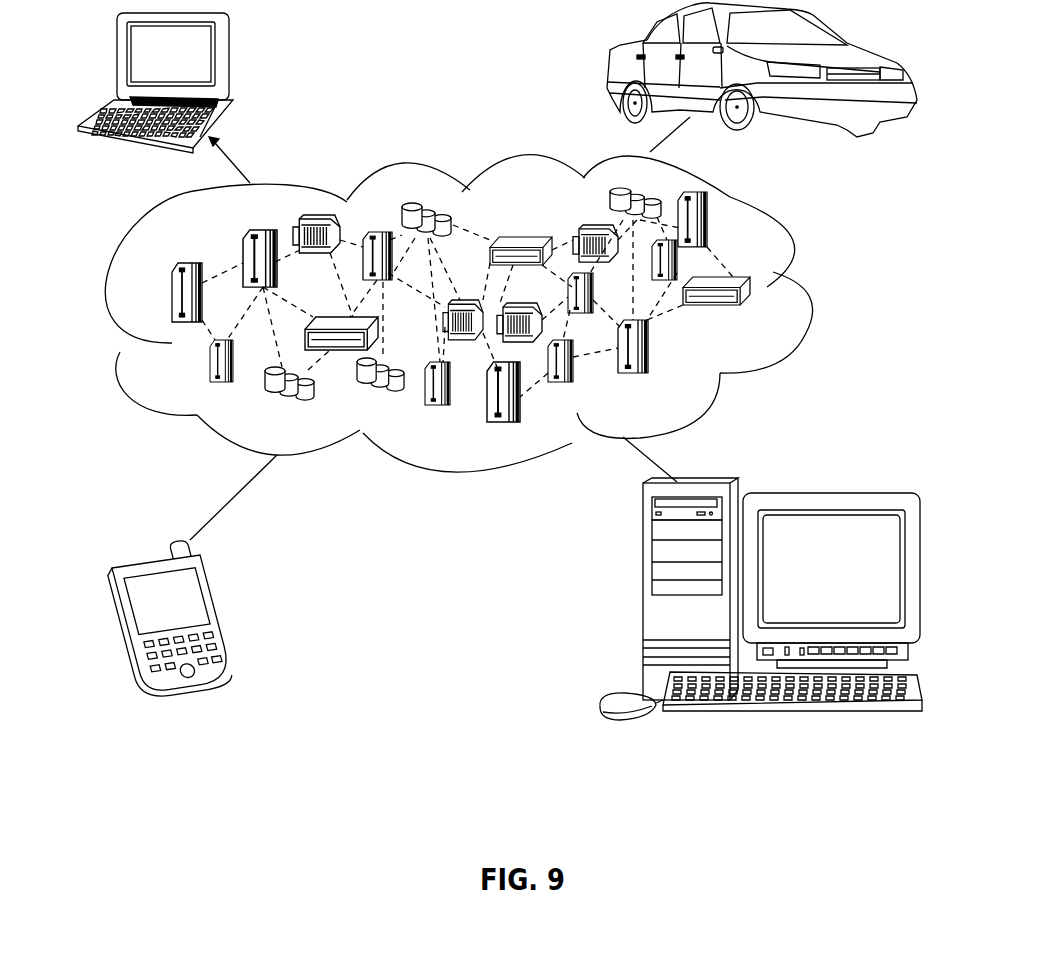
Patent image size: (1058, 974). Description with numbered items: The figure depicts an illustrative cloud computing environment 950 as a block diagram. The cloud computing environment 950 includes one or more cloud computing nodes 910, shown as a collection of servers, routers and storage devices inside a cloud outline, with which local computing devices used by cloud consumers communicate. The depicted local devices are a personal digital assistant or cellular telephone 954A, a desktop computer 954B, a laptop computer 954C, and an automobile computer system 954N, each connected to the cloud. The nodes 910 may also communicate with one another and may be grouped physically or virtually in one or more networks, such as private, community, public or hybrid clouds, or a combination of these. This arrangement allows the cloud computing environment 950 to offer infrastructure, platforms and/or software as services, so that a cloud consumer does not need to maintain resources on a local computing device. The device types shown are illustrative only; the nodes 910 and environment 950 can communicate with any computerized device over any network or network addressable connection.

The cloud computing nodes 910 is at (782, 313).
The cloud computing environment 950 is at (797, 250).
The personal digital assistant or cellular telephone 954A is at (223, 612).
The desktop computer 954B is at (643, 592).
The laptop computer 954C is at (228, 58).
The automobile computer system 954N is at (615, 59).